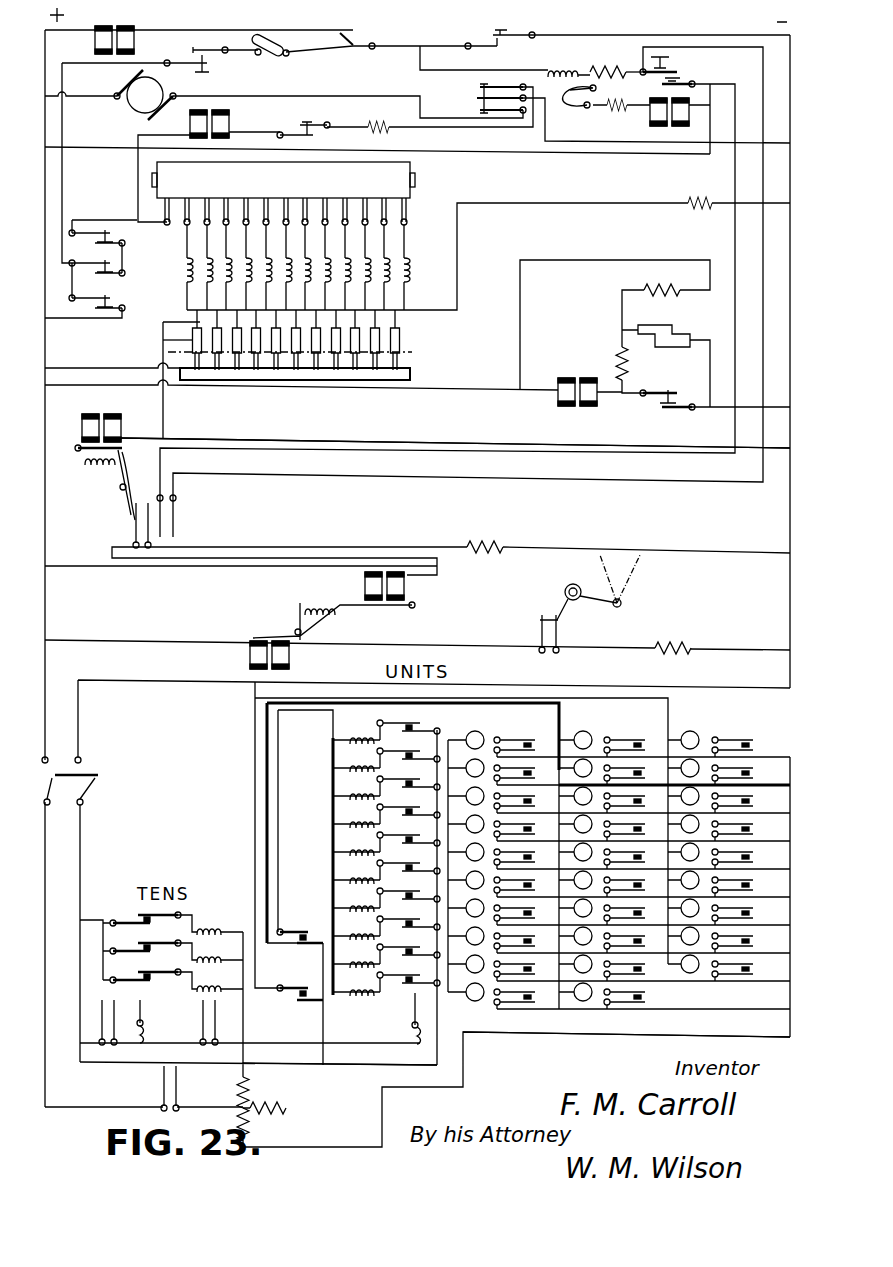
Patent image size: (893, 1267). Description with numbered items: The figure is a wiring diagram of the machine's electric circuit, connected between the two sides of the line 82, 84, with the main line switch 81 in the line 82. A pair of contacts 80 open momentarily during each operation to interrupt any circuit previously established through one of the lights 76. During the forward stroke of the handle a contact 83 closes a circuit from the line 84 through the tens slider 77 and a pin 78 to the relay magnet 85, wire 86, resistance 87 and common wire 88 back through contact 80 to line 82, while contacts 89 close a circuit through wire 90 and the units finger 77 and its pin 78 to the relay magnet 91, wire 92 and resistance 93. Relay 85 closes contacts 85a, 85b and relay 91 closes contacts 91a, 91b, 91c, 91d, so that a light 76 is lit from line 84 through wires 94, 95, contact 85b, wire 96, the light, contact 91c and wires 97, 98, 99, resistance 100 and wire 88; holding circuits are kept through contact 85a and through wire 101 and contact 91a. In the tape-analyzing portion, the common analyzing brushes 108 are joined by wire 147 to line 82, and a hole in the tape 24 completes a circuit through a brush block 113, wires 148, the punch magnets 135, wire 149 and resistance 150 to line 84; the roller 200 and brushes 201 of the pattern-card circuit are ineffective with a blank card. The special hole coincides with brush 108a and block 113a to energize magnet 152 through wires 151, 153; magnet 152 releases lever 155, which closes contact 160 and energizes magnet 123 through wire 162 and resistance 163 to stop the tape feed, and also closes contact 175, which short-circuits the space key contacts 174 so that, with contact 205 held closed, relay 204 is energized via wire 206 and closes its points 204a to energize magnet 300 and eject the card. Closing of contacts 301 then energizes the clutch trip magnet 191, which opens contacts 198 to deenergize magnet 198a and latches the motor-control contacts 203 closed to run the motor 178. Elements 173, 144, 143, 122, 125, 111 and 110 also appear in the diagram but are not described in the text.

The clutch trip magnet 191 is at (135, 44).
The contacts 301 is at (350, 40).
The contact 205 is at (455, 42).
The relay coil 204 is at (569, 73).
The relay points 204a is at (605, 70).
The contact 173 is at (668, 60).
The space key contacts 174 is at (695, 80).
The magnet 300 is at (652, 118).
The contacts 198 is at (480, 88).
The motor-control contacts 203 is at (477, 100).
The magnet 198a is at (232, 126).
The motor 178 is at (155, 80).
The wire 206 is at (513, 146).
The line 82 is at (45, 188).
The line 84 is at (790, 240).
The roller 200 is at (283, 180).
The brushes 201 is at (384, 215).
The punch magnets 135 is at (400, 268).
The wires 148 is at (385, 298).
The wire 149 is at (457, 310).
The resistance 150 is at (698, 203).
The brush blocks 113 is at (398, 336).
The brush block 113a is at (163, 340).
The tape 24 is at (412, 352).
The wire 151 is at (168, 322).
The wire 147 is at (120, 370).
The brush 108a is at (205, 372).
The analyzing brushes 108 is at (292, 372).
The relay 144 is at (556, 405).
The contact 143 is at (660, 405).
The magnet 152 is at (120, 408).
The wire 153 is at (430, 442).
The lever 155 is at (120, 505).
The contact 160 is at (142, 505).
The contact 175 is at (176, 515).
The resistance 163 is at (490, 547).
The wire 162 is at (262, 572).
The magnet 123 is at (410, 590).
The relay 122 is at (290, 660).
The contacts 125 is at (542, 612).
The lever 111 is at (590, 600).
The arm 110 is at (622, 605).
The main line switch 81 is at (90, 772).
The contact 85a is at (192, 925).
The relay magnet 85 is at (215, 947).
The pin 78 is at (142, 942).
The contact 83 is at (100, 1005).
The tens slider 77 is at (142, 1008).
The contacts 89 is at (205, 1002).
The wire 86 is at (243, 1030).
The contact 85b is at (290, 997).
The wire 95 is at (326, 1028).
The wire 94 is at (293, 1055).
The wire 90 is at (361, 1048).
The wire 101 is at (437, 1020).
The wire 99 is at (497, 1032).
The contacts 80 is at (162, 1095).
The wire 88 is at (200, 1088).
The resistance 87 is at (246, 1090).
The resistance 93 is at (270, 1112).
The resistance 100 is at (243, 1140).
The wire 92 is at (333, 790).
The wire 96 is at (267, 780).
The contact 91a is at (378, 722).
The relay magnet 91 is at (378, 752).
The contact 91b is at (560, 768).
The contact 91c is at (650, 780).
The contact 91d is at (745, 780).
The wire 97 is at (668, 790).
The wire 98 is at (790, 855).
The light 76 is at (485, 742).